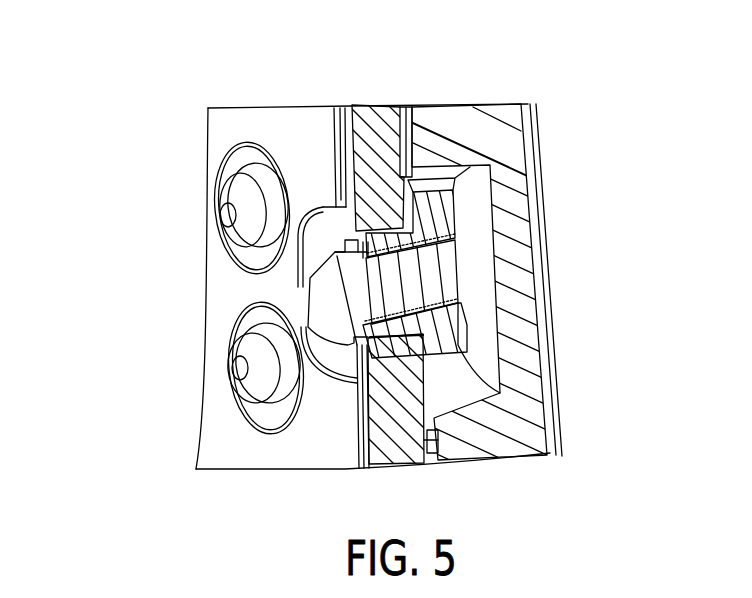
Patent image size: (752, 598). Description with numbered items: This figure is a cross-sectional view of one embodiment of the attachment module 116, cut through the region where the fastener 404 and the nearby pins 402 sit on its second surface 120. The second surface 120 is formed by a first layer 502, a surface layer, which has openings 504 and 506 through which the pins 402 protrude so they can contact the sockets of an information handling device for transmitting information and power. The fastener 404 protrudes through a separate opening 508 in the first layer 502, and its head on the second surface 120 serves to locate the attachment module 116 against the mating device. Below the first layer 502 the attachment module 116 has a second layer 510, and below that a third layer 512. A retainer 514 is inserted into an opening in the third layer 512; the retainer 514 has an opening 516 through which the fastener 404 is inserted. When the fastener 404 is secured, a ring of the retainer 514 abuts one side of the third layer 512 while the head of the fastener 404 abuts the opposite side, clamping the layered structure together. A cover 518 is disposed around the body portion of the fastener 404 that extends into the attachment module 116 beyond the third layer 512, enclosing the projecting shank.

The attachment module 116 is at (107, 45).
The second surface 120 is at (267, 128).
The pins 402 is at (218, 213).
The fastener 404 is at (303, 300).
The first layer 502 is at (322, 168).
The opening 504 is at (218, 185).
The opening 506 is at (228, 333).
The opening 508 is at (336, 420).
The second layer 510 is at (390, 440).
The third layer 512 is at (434, 442).
The retainer 514 is at (440, 216).
The opening 516 is at (458, 304).
The cover 518 is at (507, 163).